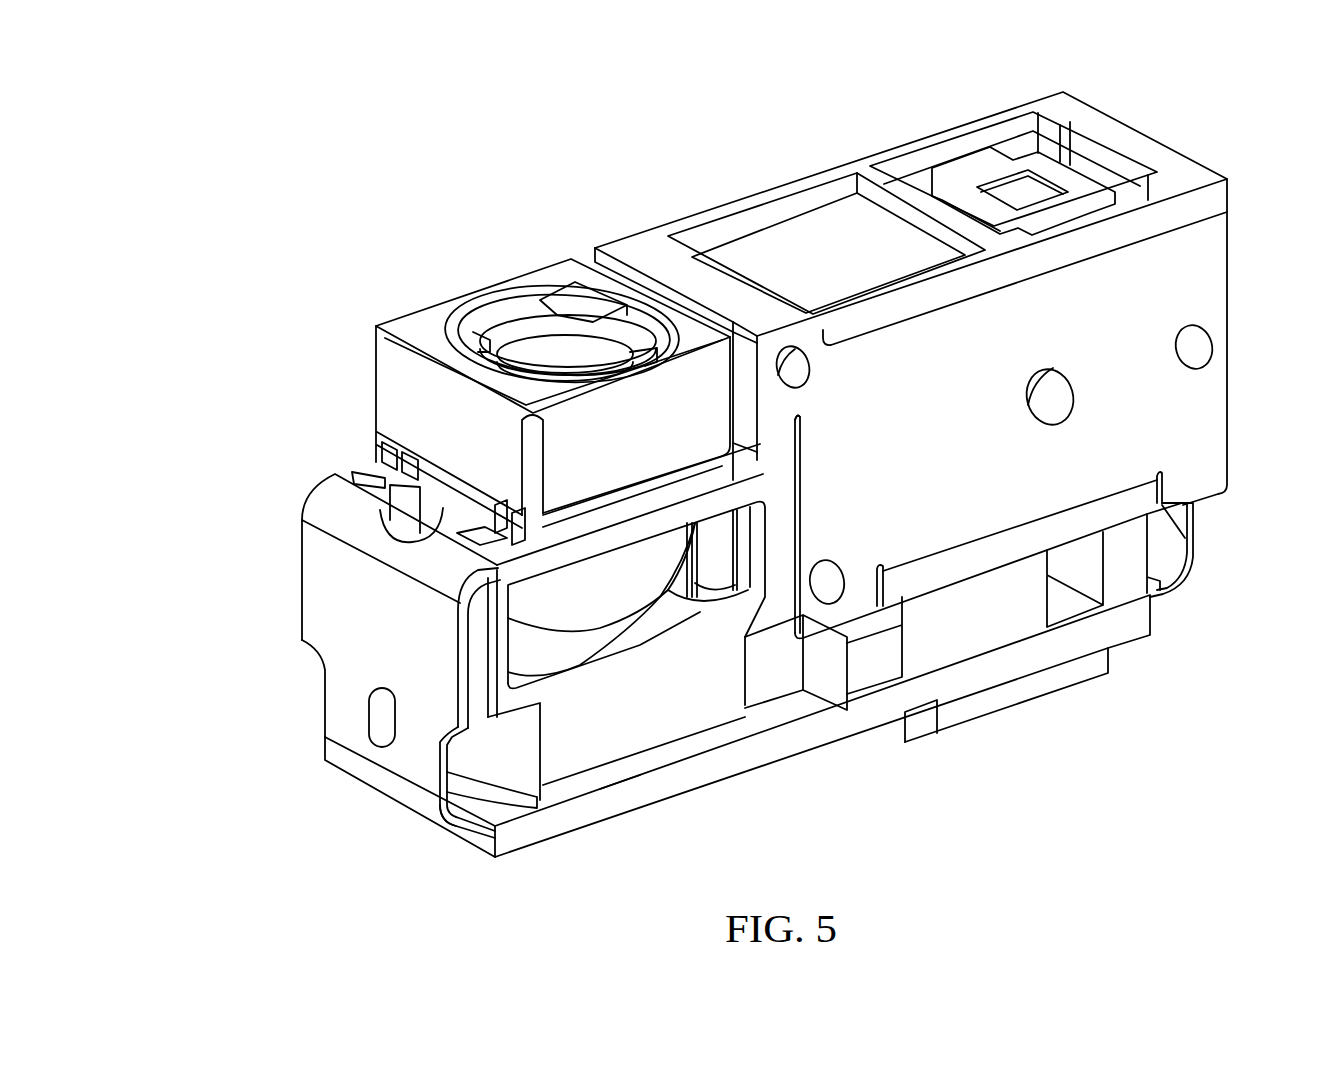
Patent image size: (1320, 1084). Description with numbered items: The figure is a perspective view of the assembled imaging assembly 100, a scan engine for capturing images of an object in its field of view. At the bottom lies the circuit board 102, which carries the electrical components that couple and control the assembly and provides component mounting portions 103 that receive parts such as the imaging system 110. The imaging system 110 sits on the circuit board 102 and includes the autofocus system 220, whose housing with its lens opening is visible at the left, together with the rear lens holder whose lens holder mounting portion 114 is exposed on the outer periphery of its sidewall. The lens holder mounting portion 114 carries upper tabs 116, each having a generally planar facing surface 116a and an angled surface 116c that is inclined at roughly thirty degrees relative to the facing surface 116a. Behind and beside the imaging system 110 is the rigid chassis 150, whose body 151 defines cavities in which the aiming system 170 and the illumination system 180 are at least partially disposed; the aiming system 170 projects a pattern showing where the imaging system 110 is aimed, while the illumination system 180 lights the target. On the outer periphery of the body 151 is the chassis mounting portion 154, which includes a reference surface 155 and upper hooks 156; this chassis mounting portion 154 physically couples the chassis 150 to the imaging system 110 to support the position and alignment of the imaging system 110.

The imaging assembly 100 is at (243, 335).
The imaging system 110 is at (265, 558).
The autofocus system 220 is at (378, 362).
The illumination system 180 is at (828, 203).
The aiming system 170 is at (1015, 140).
The chassis 150 is at (1160, 147).
The body 151 is at (1143, 333).
The upper hooks 156 is at (785, 402).
The chassis mounting portion 154 is at (806, 423).
The upper tabs 116 is at (778, 443).
The lens holder mounting portion 114 is at (767, 475).
The reference surface 155 is at (812, 539).
The facing surface 116a is at (776, 606).
The angled surface 116c is at (455, 753).
The component mounting portions 103 is at (625, 770).
The circuit board 102 is at (720, 778).